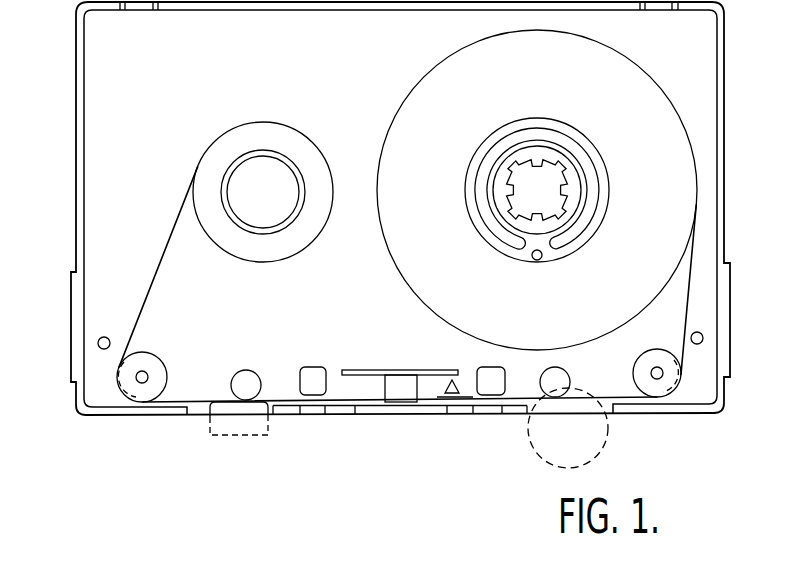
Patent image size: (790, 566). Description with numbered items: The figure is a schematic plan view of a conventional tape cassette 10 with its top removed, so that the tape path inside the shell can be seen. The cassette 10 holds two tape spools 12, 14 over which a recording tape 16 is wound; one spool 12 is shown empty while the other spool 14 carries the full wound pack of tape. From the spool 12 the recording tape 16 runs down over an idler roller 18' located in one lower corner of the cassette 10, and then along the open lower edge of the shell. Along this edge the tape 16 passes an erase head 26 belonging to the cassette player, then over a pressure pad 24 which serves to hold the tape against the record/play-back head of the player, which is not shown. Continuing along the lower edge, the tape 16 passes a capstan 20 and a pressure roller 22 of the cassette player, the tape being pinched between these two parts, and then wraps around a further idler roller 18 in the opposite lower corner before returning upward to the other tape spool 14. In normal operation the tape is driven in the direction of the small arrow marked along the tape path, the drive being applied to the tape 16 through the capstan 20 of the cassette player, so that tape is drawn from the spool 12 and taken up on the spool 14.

The tape cassette 10 is at (68, 209).
The tape spool 12 is at (242, 175).
The tape spool 14 is at (573, 170).
The recording tape 16 is at (155, 292).
The idler roller 18' is at (173, 356).
The further idler roller 18 is at (676, 406).
The capstan 20 is at (538, 388).
The pressure roller 22 is at (592, 430).
The pressure pad 24 is at (402, 388).
The erase head 26 is at (208, 421).